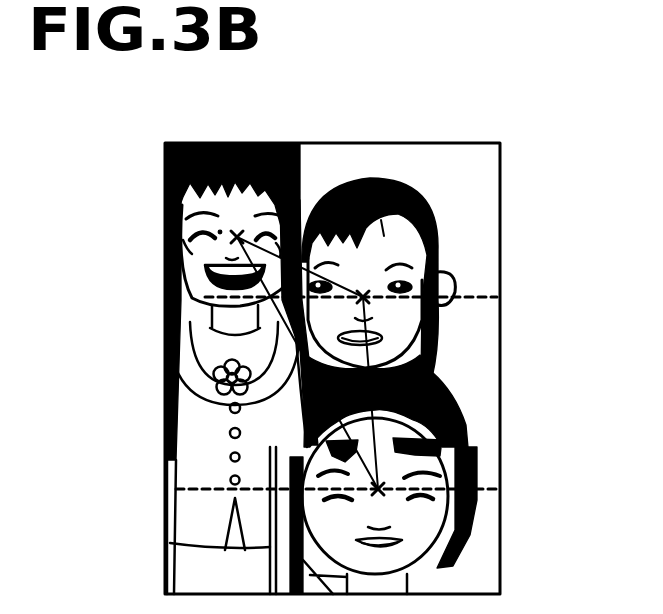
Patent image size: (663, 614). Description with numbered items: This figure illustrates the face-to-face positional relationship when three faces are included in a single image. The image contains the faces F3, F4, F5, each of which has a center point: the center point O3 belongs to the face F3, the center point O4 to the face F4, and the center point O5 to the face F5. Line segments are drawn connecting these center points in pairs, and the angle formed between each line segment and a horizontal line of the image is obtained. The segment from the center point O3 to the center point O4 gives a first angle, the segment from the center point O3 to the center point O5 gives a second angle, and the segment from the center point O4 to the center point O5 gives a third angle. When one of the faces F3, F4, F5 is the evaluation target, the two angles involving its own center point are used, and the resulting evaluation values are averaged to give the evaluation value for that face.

The face F3 is at (440, 450).
The face F4 is at (385, 190).
The face F5 is at (192, 255).
The center point O3 is at (380, 492).
The center point O4 is at (363, 297).
The center point O5 is at (237, 237).